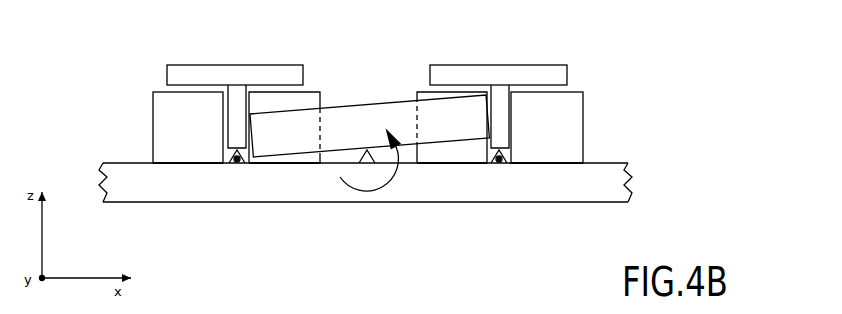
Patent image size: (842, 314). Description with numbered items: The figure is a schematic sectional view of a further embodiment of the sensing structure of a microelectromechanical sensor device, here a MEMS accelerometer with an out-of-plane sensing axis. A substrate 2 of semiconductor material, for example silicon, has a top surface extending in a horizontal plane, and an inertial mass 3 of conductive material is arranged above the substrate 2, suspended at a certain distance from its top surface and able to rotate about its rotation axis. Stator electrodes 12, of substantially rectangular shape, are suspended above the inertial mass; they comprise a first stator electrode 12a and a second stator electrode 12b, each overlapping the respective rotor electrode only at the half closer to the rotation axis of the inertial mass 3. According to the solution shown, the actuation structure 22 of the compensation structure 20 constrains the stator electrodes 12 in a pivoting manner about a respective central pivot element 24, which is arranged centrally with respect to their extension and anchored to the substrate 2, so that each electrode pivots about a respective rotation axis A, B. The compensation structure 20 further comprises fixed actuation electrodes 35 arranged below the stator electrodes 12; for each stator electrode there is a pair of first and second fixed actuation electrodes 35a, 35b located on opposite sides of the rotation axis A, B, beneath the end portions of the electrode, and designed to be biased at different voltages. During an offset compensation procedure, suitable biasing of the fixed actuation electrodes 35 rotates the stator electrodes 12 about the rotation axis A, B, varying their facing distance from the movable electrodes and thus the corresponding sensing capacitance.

The substrate 2 is at (609, 164).
The inertial mass 3 is at (368, 118).
The stator electrodes 12 is at (185, 61).
The first stator electrode 12a is at (258, 74).
The second stator electrode 12b is at (500, 72).
The fixed actuation electrodes 35 is at (142, 140).
The first fixed actuation electrode 35a is at (170, 156).
The second fixed actuation electrode 35b is at (296, 163).
The compensation structure 20 is at (218, 181).
The actuation structure 22 is at (190, 173).
The central pivot element 24 is at (246, 168).
The rotation axis A is at (238, 166).
The rotation axis B is at (498, 165).